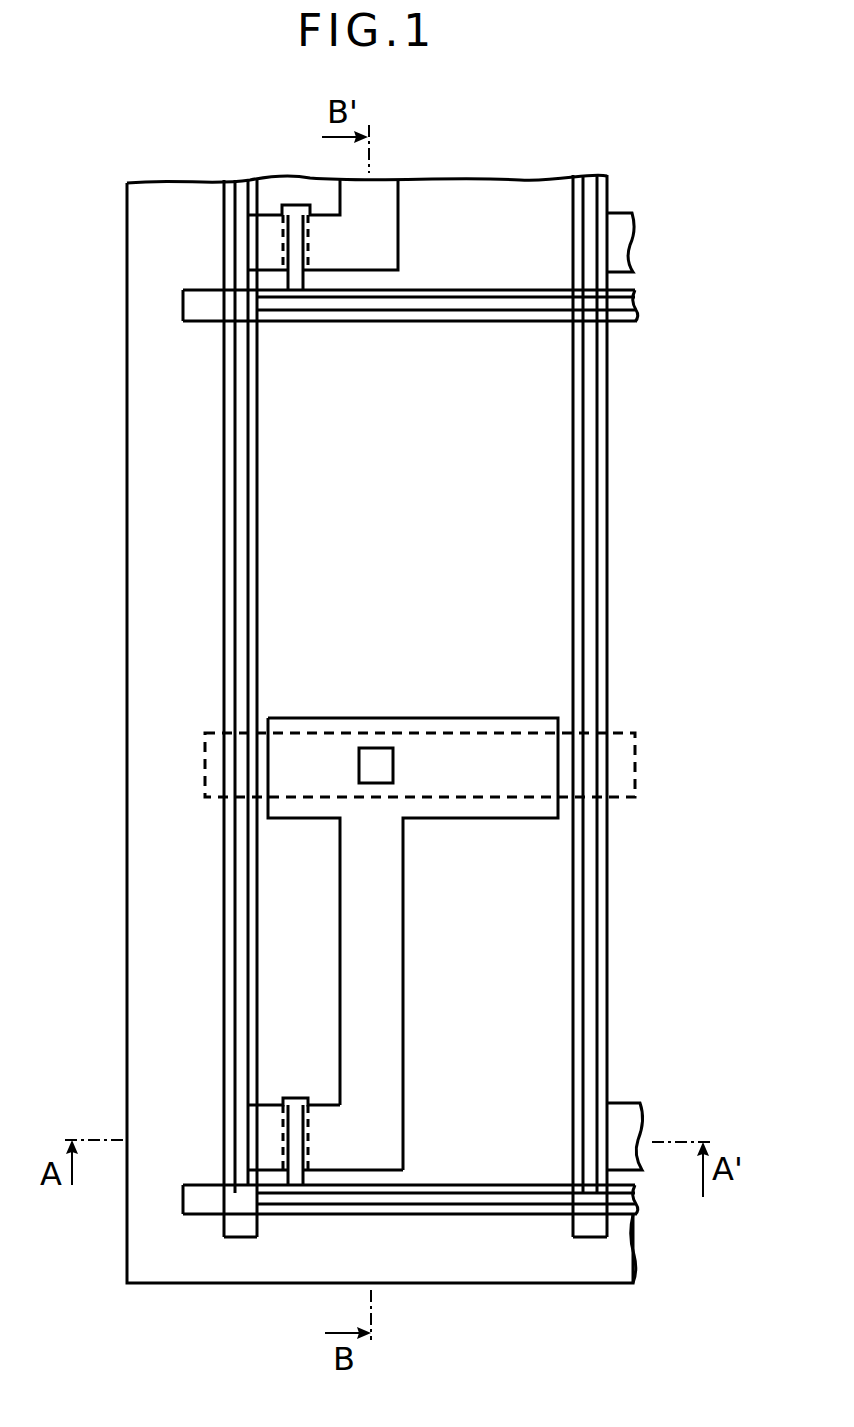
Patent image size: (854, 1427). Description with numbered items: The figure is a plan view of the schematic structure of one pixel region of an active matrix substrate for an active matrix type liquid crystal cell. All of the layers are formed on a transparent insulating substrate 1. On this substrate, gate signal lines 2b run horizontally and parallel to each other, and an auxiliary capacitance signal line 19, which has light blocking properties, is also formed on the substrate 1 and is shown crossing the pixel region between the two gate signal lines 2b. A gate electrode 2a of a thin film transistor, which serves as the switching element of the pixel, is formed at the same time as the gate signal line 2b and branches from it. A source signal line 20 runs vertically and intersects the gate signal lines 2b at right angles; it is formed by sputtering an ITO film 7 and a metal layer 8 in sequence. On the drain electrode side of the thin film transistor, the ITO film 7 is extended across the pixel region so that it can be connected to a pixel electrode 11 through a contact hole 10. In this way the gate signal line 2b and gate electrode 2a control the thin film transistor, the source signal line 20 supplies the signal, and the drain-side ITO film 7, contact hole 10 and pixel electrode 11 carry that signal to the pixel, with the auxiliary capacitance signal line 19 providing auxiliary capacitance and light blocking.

The transparent insulating substrate 1 is at (166, 200).
The gate electrode 2a is at (293, 205).
The gate signal line 2b is at (183, 305).
The ITO film 7 is at (395, 994).
The metal layer 8 is at (242, 1228).
The contact hole 10 is at (383, 757).
The pixel electrode 11 is at (556, 542).
The auxiliary capacitance signal line 19 is at (637, 750).
The source signal line 20 is at (224, 650).